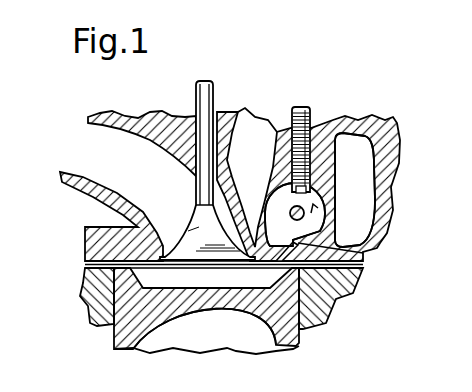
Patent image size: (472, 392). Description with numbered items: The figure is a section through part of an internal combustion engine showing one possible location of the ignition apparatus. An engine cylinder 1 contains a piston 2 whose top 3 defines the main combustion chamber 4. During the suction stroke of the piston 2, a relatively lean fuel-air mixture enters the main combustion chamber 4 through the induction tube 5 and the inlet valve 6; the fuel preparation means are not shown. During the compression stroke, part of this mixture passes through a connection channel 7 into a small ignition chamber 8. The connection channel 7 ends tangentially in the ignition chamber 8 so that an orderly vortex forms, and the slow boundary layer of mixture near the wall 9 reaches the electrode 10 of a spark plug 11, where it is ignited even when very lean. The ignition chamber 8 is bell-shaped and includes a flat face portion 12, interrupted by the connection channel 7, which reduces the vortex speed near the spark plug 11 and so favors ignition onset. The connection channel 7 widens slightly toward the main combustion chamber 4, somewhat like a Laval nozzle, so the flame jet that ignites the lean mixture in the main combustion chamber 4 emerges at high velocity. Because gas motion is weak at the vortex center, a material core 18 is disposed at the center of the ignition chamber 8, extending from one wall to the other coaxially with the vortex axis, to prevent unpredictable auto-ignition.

The engine cylinder 1 is at (98, 294).
The piston 2 is at (126, 336).
The top of the piston 3 is at (100, 246).
The main combustion chamber 4 is at (208, 280).
The induction tube 5 is at (82, 148).
The inlet valve 6 is at (195, 229).
The connection channel 7 is at (364, 266).
The ignition chamber 8 is at (311, 222).
The wall 9 is at (337, 204).
The electrode 10 is at (327, 190).
The spark plug 11 is at (308, 108).
The flat face portion 12 is at (377, 249).
The material core 18 is at (291, 207).